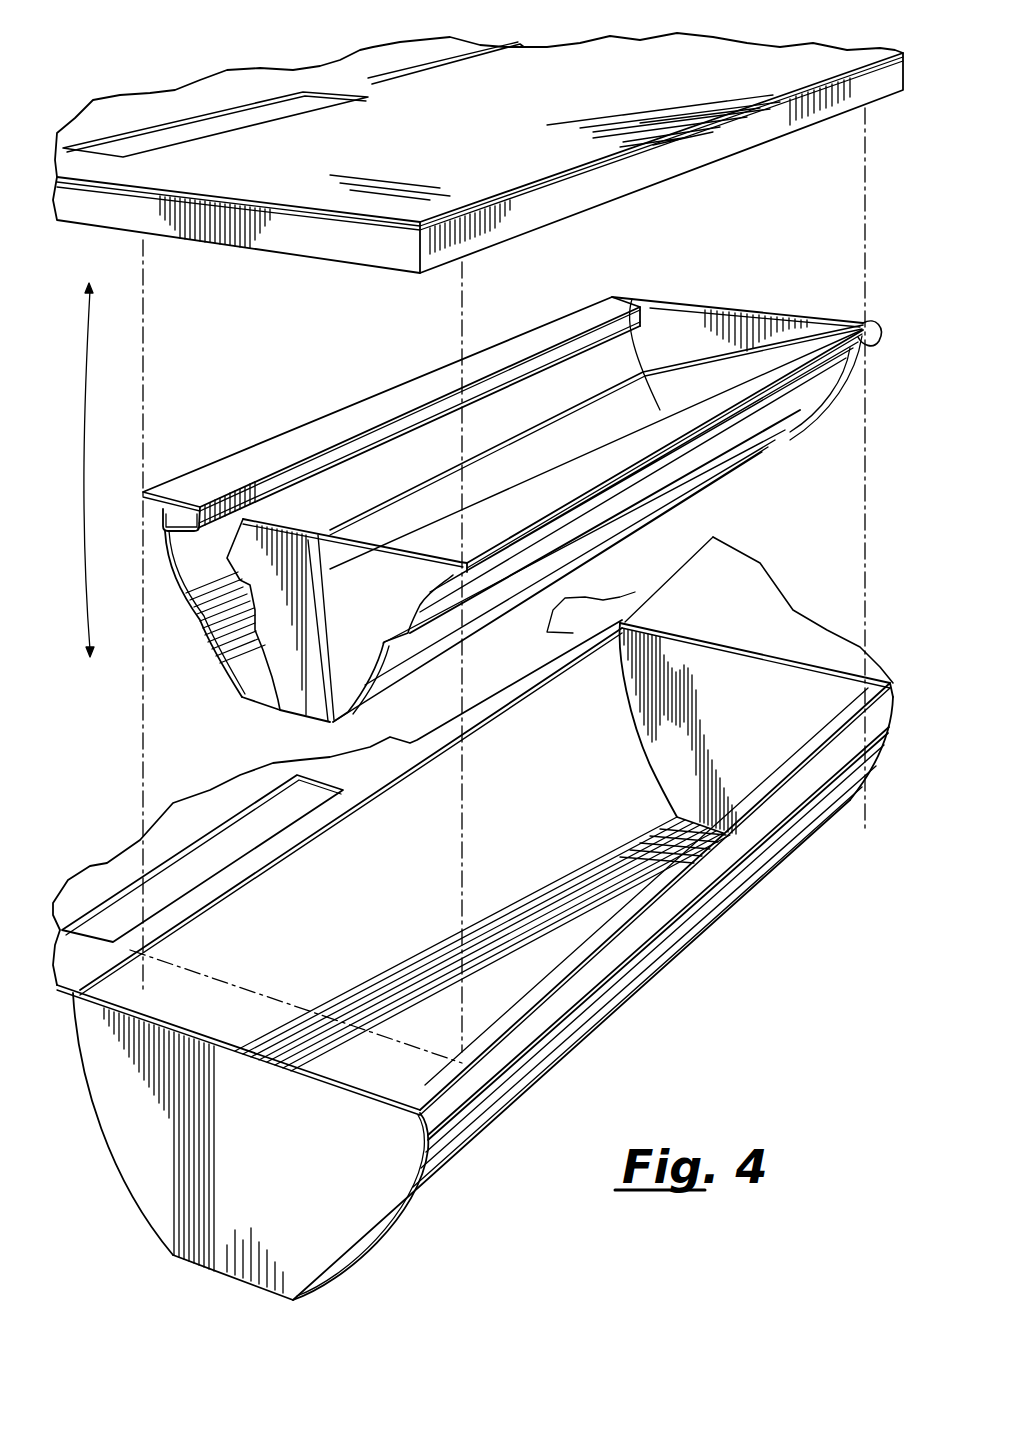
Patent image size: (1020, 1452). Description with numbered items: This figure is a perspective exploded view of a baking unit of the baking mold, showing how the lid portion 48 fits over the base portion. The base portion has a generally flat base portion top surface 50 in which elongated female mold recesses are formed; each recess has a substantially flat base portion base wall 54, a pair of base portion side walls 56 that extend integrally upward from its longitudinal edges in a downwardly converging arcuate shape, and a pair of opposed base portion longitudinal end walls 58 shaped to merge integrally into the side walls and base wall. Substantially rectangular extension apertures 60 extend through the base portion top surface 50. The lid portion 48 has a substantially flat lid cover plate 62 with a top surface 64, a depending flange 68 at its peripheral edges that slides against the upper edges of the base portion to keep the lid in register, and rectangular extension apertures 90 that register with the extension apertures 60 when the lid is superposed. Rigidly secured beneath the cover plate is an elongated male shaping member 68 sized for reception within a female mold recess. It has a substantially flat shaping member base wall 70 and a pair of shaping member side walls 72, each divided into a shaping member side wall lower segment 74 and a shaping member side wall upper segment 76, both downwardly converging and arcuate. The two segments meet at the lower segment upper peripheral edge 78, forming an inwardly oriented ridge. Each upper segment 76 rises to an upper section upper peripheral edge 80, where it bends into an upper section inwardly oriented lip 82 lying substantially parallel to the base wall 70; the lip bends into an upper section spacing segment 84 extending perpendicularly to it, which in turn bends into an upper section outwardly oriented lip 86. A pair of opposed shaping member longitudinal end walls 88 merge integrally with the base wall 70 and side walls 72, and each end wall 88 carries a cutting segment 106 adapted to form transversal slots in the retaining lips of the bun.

The lid portion 48 is at (85, 1261).
The base portion top surface 50 is at (108, 864).
The base portion base wall 54 is at (578, 950).
The base portion side walls 56 is at (122, 1179).
The base portion longitudinal end walls 58 is at (818, 728).
The extension apertures 60 is at (227, 822).
The lid cover plate 62 is at (123, 237).
The top surface 64 is at (258, 187).
The male shaping member 68 is at (681, 157).
The shaping member base wall 70 is at (262, 695).
The shaping member side walls 72 is at (767, 453).
The shaping member side wall lower segment 74 is at (210, 657).
The shaping member side wall upper segment 76 is at (168, 573).
The shaping member side wall lower segment upper peripheral edge 78 is at (190, 597).
The shaping member side wall upper section upper peripheral edge 80 is at (170, 526).
The upper section inwardly oriented lip 82 is at (172, 532).
The upper section spacing segment 84 is at (230, 500).
The upper section outwardly oriented lip 86 is at (567, 327).
The shaping member longitudinal end walls 88 is at (695, 315).
The extension apertures 90 is at (262, 103).
The cutting segment 106 is at (866, 320).